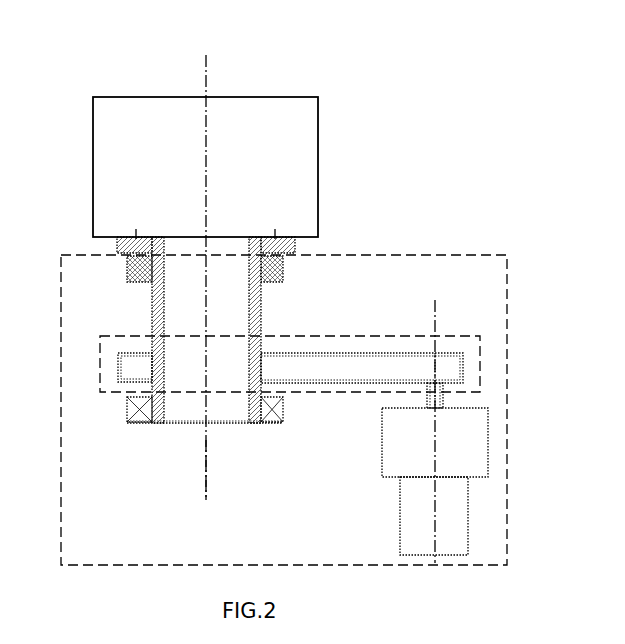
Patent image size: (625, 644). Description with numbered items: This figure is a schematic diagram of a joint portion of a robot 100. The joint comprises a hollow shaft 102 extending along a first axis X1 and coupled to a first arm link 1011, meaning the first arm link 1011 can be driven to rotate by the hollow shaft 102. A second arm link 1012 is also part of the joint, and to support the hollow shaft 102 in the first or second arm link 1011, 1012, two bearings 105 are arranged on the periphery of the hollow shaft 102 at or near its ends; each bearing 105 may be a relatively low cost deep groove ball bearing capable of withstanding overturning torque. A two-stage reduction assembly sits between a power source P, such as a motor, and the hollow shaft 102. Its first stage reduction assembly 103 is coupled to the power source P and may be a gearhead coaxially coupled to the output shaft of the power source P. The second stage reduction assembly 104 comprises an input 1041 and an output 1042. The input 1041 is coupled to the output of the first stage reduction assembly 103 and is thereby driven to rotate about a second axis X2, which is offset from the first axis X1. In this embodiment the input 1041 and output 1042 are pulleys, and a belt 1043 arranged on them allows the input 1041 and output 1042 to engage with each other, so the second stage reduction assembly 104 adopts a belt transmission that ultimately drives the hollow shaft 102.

The robot 100 is at (318, 46).
The first arm link 1011 is at (103, 141).
The second arm link 1012 is at (65, 302).
The hollow shaft 102 is at (157, 316).
The bearing 105 is at (283, 269).
The second stage reduction assembly 104 is at (365, 337).
The output 1042 is at (137, 356).
The belt 1043 is at (325, 360).
The input 1041 is at (428, 357).
The first stage reduction assembly 103 is at (385, 462).
The power source P is at (405, 530).
The first axis X1 is at (193, 470).
The second axis X2 is at (448, 431).